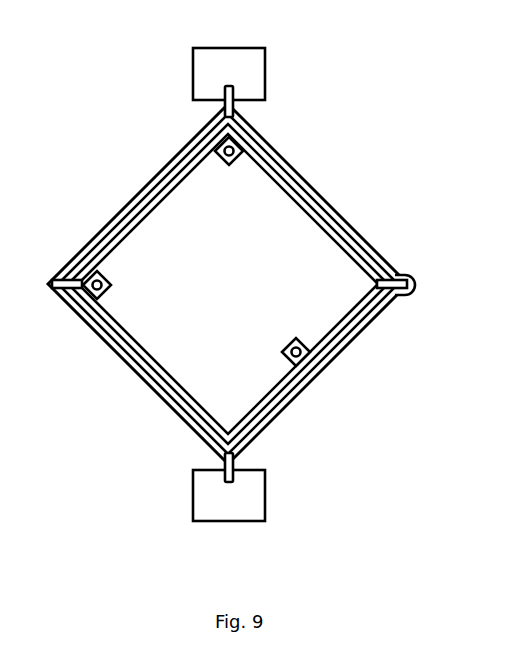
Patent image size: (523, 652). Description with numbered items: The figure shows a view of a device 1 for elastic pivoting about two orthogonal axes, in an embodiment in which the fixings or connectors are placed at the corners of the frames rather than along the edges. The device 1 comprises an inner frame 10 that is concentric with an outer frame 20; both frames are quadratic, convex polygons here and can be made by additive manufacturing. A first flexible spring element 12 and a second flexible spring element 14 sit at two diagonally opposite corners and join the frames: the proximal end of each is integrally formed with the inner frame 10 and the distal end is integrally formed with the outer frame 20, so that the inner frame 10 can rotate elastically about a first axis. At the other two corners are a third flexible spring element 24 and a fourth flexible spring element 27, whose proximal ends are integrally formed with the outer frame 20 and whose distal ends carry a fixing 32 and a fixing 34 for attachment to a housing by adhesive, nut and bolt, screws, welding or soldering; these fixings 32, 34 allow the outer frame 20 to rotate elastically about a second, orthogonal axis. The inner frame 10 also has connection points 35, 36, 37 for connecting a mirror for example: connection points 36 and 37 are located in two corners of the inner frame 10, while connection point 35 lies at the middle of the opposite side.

The device 1 is at (358, 152).
The inner frame 10 is at (155, 362).
The first flexible spring element 12 is at (63, 273).
The second flexible spring element 14 is at (395, 273).
The outer frame 20 is at (350, 348).
The third flexible spring element 24 is at (222, 460).
The fourth flexible spring element 27 is at (207, 127).
The fixing 32 is at (253, 503).
The fixing 34 is at (253, 65).
The connection point 35 is at (293, 338).
The connection point 36 is at (108, 283).
The connection point 37 is at (230, 165).